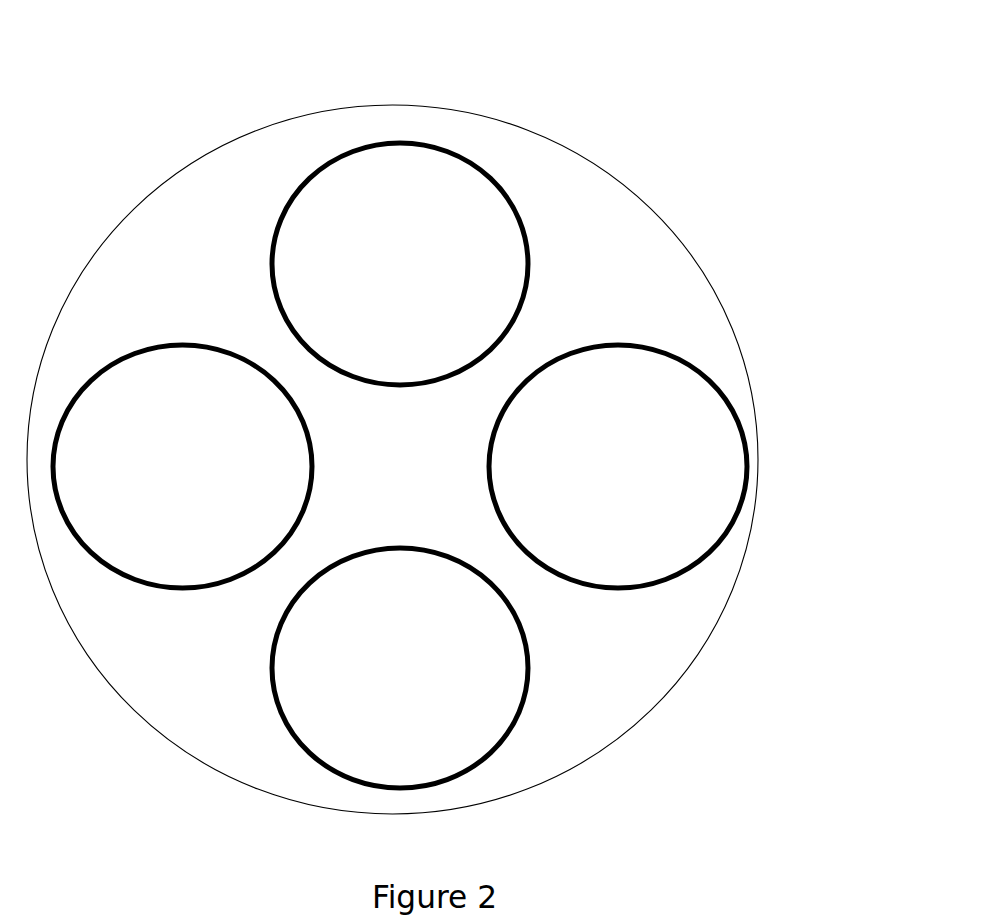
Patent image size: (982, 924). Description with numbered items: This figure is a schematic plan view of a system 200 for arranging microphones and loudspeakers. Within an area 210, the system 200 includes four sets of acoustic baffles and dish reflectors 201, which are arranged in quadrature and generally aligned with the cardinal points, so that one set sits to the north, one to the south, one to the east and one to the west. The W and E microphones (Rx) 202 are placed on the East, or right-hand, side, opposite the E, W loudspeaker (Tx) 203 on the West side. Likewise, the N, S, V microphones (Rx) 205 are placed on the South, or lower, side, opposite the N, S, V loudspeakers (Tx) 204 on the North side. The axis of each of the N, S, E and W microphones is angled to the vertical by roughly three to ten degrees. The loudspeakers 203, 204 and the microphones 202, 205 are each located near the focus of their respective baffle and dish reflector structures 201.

The system 200 is at (532, 110).
The acoustic baffles and dish reflectors 201 is at (165, 345).
The W and E microphones (Rx) 202 is at (585, 492).
The E, W loudspeaker (Tx) 203 is at (216, 467).
The N, S, V loudspeakers (Tx) 204 is at (357, 267).
The N, S, V microphones (Rx) 205 is at (450, 712).
The area 210 is at (668, 630).